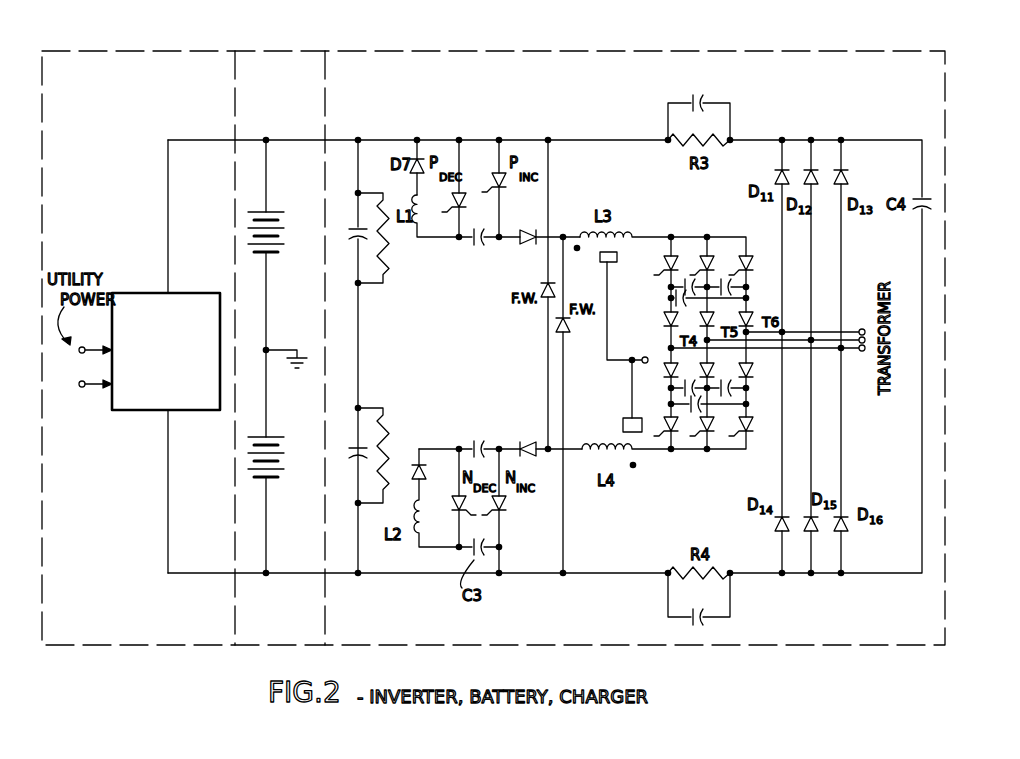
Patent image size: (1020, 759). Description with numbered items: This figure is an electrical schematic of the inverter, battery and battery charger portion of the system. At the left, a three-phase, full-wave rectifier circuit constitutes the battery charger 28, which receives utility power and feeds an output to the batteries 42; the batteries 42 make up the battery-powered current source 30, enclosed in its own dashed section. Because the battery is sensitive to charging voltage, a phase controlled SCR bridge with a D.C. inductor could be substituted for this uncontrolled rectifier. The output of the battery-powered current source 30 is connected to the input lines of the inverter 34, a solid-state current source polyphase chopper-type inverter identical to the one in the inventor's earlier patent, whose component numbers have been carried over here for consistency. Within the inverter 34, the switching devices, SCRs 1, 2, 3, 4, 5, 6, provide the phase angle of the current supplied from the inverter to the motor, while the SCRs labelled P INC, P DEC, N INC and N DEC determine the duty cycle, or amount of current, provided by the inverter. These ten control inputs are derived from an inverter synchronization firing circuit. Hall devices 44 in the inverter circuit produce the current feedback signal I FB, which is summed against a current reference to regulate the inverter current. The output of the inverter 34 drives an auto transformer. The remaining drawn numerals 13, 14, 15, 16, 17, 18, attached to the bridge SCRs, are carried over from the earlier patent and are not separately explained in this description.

The battery charger 28 is at (158, 413).
The battery-powered current source 30 is at (282, 50).
The inverter 34 is at (383, 50).
The batteries 42 is at (250, 228).
The Hall devices 44 is at (617, 258).
The SCR 1 is at (663, 266).
The SCR 2 is at (700, 266).
The SCR 3 is at (757, 243).
The SCR 4 is at (664, 411).
The SCR 5 is at (717, 465).
The SCR 6 is at (761, 415).
The thyristor 13 is at (665, 241).
The thyristor 14 is at (707, 241).
The thyristor 15 is at (750, 251).
The thyristor 16 is at (660, 425).
The thyristor 17 is at (702, 449).
The thyristor 18 is at (750, 427).